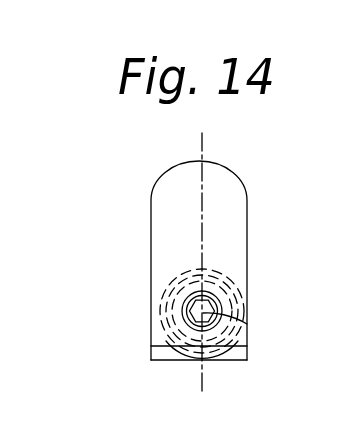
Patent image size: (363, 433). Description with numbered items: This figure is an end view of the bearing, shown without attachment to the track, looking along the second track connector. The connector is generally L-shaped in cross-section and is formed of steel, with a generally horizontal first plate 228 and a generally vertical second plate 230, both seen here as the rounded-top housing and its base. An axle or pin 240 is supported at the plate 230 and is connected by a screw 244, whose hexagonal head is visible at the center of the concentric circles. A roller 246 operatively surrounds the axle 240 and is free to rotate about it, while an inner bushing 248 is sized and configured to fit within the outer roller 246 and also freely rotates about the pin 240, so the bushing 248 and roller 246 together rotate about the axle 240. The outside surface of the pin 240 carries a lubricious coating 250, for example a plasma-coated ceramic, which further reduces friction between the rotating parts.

The second plate 230 is at (165, 187).
The first plate 228 is at (244, 359).
The screw 244 is at (247, 326).
The roller 246 is at (236, 279).
The inner bushing 248 is at (170, 282).
The coating 250 is at (172, 322).
The axle or pin 240 is at (162, 361).